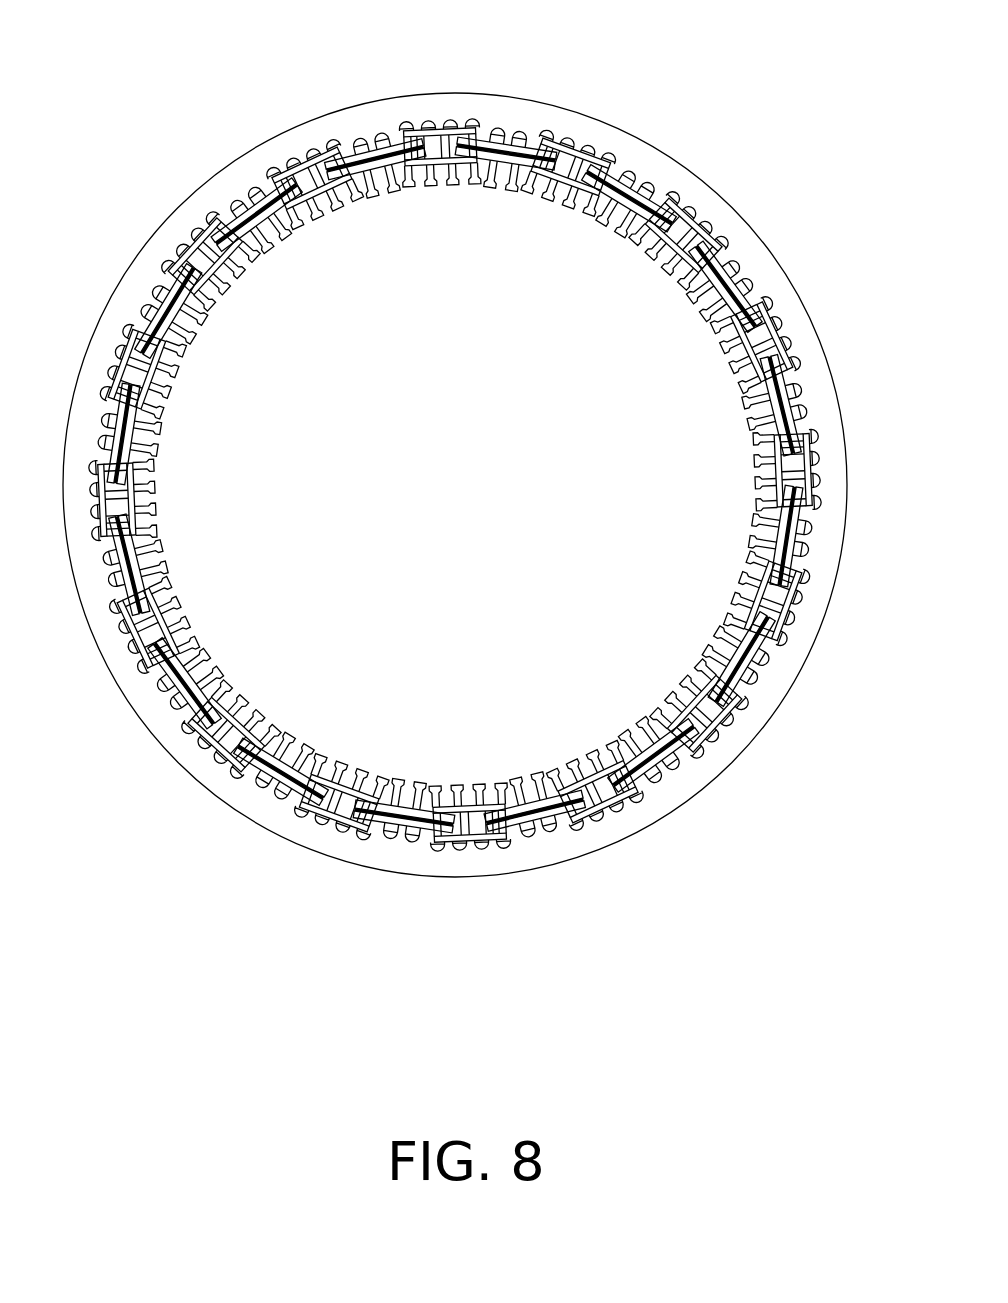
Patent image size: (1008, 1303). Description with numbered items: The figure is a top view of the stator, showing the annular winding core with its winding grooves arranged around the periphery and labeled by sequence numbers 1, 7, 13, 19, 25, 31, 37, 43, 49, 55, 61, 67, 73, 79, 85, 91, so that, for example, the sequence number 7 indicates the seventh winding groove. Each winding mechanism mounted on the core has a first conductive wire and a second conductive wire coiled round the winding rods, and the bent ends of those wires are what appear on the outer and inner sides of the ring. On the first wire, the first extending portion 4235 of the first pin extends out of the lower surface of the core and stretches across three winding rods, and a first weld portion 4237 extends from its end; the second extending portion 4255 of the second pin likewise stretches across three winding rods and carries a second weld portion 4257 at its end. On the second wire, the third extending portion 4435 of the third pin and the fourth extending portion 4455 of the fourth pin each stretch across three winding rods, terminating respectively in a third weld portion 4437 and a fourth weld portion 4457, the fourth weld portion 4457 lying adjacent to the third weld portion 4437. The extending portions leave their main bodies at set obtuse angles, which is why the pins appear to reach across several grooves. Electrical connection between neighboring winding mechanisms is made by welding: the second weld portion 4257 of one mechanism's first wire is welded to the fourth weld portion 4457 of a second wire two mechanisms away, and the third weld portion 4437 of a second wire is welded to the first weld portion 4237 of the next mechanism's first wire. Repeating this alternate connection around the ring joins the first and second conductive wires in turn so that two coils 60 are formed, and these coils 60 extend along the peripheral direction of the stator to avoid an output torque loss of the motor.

The coil 60 is at (603, 143).
The sequence number of winding groove 1 is at (405, 127).
The sequence number of winding groove 7 is at (273, 170).
The sequence number of winding groove 13 is at (170, 270).
The sequence number of winding groove 19 is at (103, 390).
The sequence number of winding groove 25 is at (93, 533).
The sequence number of winding groove 31 is at (135, 680).
The sequence number of winding groove 37 is at (232, 772).
The sequence number of winding groove 43 is at (352, 843).
The sequence number of winding groove 49 is at (468, 848).
The sequence number of winding groove 55 is at (615, 797).
The sequence number of winding groove 61 is at (742, 700).
The sequence number of winding groove 67 is at (815, 573).
The sequence number of winding groove 73 is at (813, 437).
The sequence number of winding groove 79 is at (760, 300).
The sequence number of winding groove 85 is at (672, 198).
The sequence number of winding groove 91 is at (543, 140).
The first extending portion 4235 is at (445, 128).
The first weld portion 4237 is at (478, 128).
The third extending portion 4435 is at (377, 148).
The third weld portion 4437 is at (330, 152).
The fourth extending portion 4455 is at (322, 190).
The fourth weld portion 4457 is at (350, 180).
The second extending portion 4255 is at (278, 215).
The second weld portion 4257 is at (205, 192).